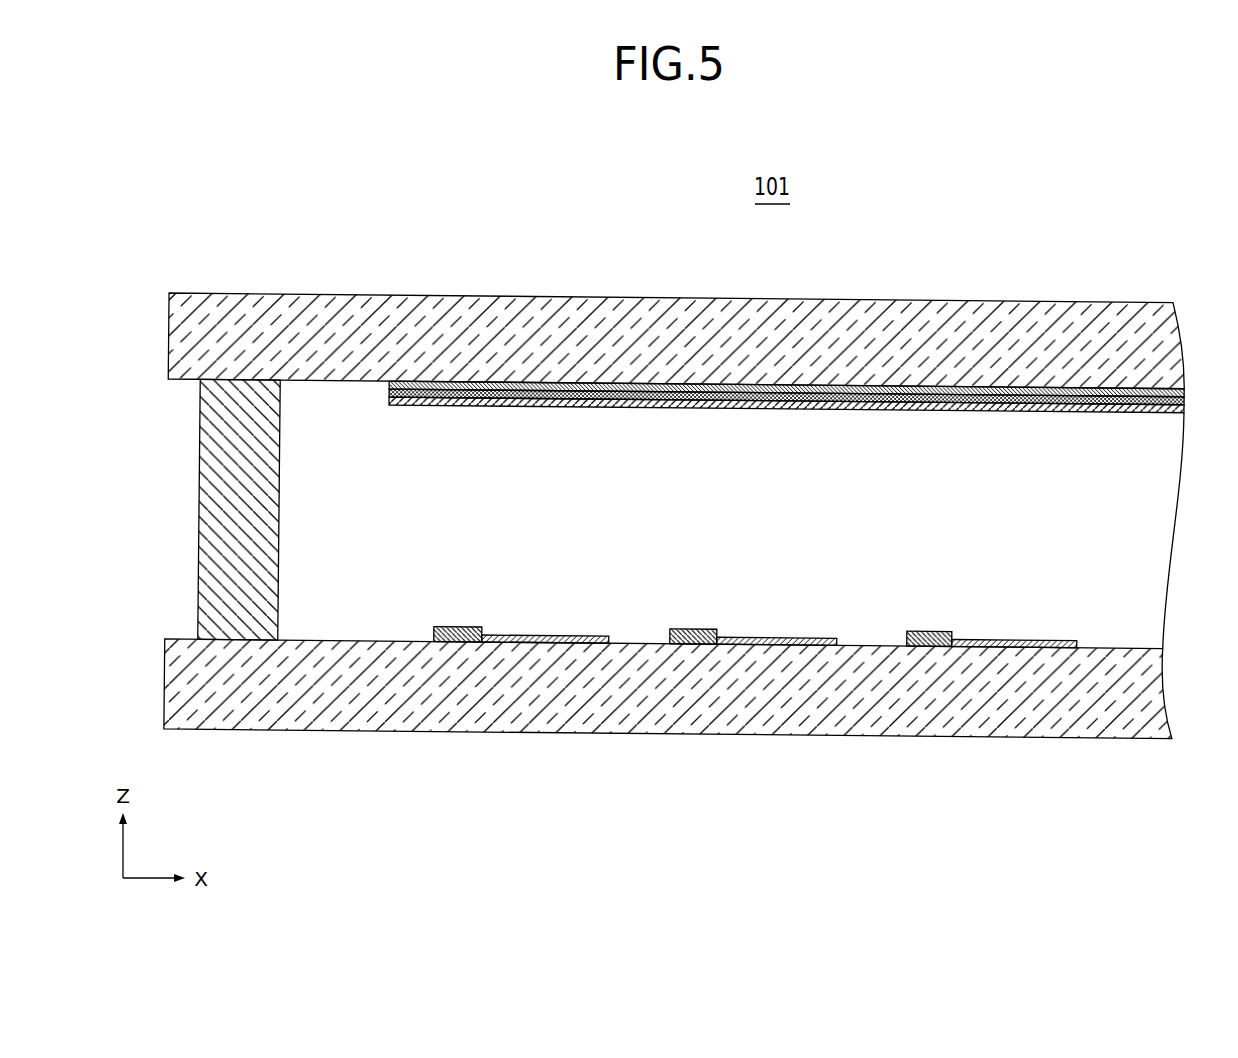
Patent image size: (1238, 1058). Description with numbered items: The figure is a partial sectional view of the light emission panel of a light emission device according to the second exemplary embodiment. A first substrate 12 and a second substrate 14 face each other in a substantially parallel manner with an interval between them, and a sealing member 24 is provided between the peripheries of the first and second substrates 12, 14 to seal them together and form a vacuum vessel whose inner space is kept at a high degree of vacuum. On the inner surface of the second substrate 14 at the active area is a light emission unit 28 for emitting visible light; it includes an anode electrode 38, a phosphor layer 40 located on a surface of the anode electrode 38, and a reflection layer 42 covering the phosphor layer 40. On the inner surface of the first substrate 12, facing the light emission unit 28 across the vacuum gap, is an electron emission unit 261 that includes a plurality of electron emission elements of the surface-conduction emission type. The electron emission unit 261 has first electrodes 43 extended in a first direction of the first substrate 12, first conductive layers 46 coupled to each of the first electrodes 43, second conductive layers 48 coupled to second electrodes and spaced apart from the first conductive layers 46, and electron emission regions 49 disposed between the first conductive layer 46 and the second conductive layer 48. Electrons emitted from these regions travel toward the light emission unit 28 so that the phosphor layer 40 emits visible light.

The second substrate 14 is at (221, 306).
The first substrate 12 is at (387, 712).
The sealing member 24 is at (281, 532).
The light emission unit 28 is at (786, 361).
The anode electrode 38 is at (660, 388).
The phosphor layer 40 is at (605, 395).
The reflection layer 42 is at (550, 402).
The first electrodes 43 is at (710, 678).
The first conductive layers 46 is at (737, 636).
The second conductive layers 48 is at (822, 636).
The electron emission regions 49 is at (777, 678).
The electron emission unit 261 is at (1041, 602).